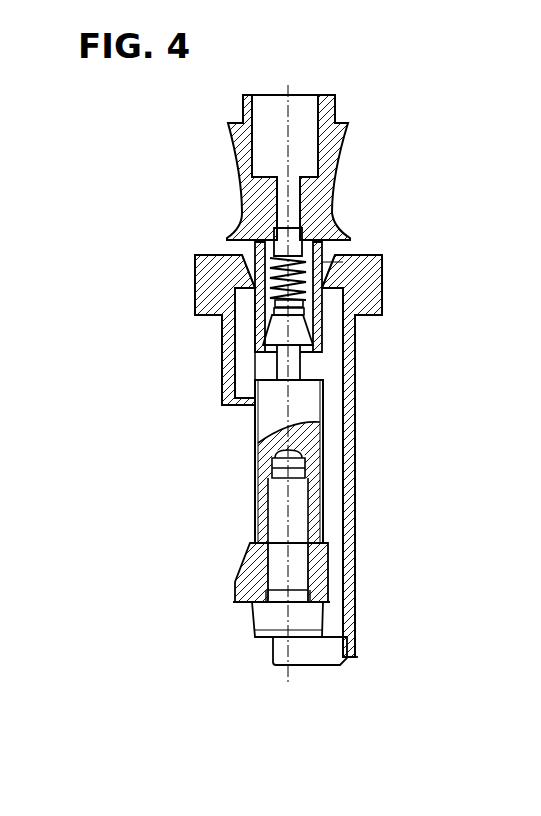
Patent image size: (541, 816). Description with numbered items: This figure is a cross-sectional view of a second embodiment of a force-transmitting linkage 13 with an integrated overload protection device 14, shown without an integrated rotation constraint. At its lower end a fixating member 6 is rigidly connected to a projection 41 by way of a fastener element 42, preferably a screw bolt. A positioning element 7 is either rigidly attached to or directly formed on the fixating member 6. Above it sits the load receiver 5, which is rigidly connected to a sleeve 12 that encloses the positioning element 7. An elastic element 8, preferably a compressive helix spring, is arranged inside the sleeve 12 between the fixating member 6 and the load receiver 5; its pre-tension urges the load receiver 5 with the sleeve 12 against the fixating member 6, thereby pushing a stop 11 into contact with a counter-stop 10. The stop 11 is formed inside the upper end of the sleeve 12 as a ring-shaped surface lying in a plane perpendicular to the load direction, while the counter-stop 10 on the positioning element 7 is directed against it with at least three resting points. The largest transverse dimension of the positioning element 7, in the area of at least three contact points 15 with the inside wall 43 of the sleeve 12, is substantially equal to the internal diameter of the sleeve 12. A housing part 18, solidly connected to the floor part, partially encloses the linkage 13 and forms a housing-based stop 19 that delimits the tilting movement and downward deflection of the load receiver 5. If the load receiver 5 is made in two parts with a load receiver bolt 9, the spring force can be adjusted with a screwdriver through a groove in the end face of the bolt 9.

The load receiver 5 is at (322, 179).
The inside wall 43 is at (233, 260).
The housing part 18 is at (195, 265).
The sleeve 12 is at (327, 275).
The housing-based stop 19 is at (325, 255).
The overload protection device 14 is at (207, 357).
The counter-stop 10 is at (224, 390).
The stop 11 is at (258, 312).
The load receiver bolt 9 is at (313, 243).
The elastic element 8 is at (315, 286).
The positioning element 7 is at (280, 325).
The contact points 15 is at (258, 343).
The force-transmitting linkage 13 is at (240, 472).
The fixating member 6 is at (300, 455).
The projection 41 is at (237, 583).
The fastener element 42 is at (273, 615).